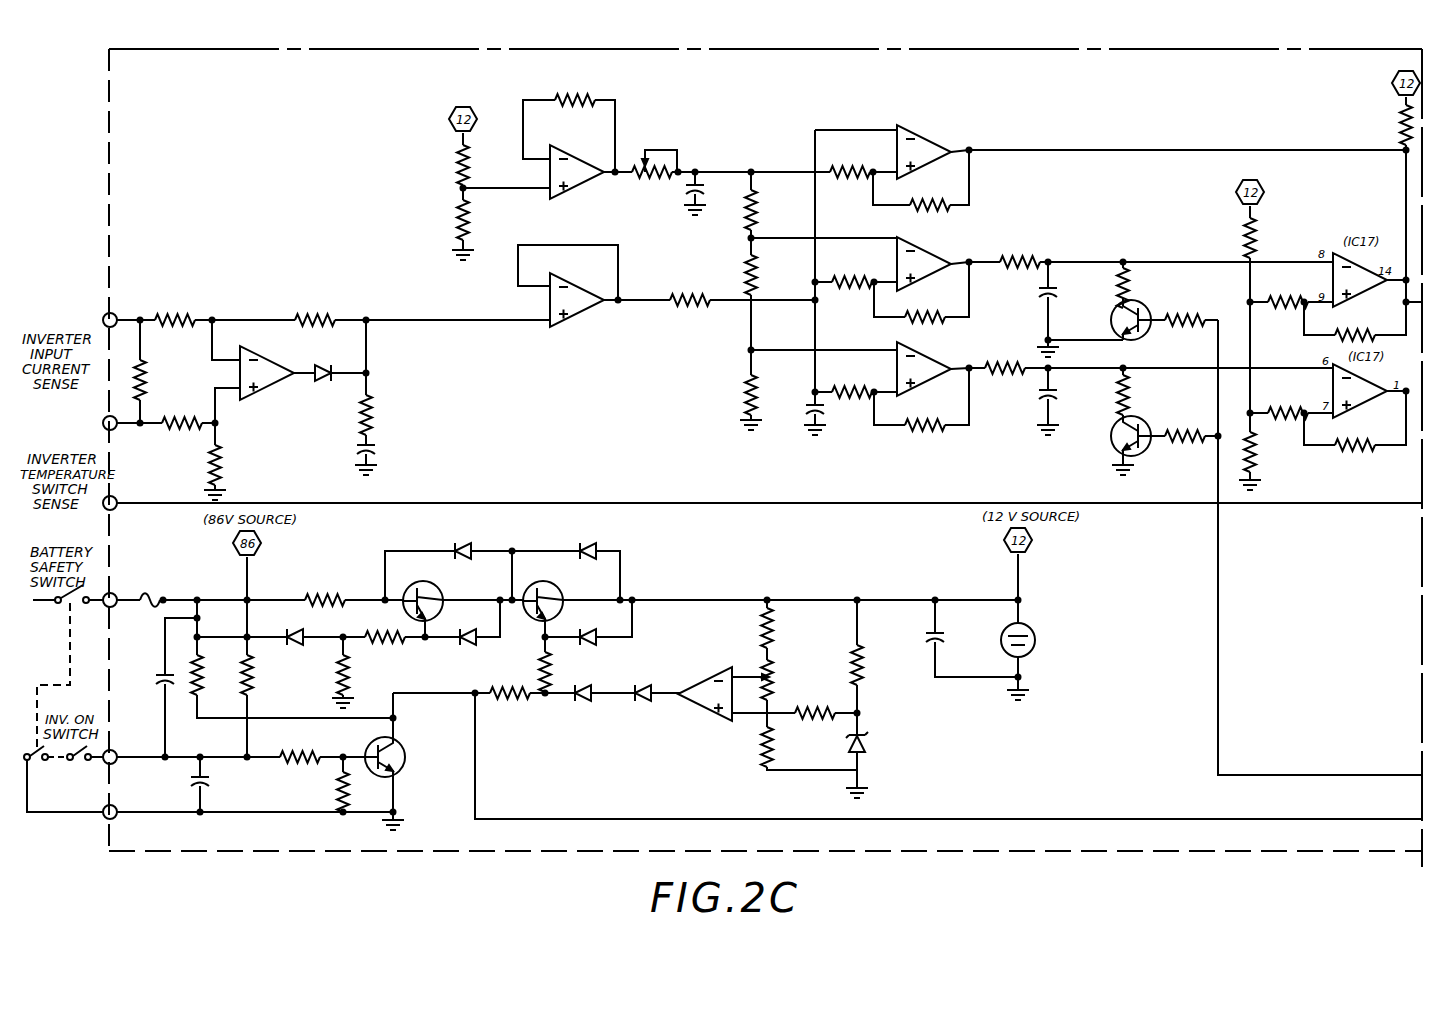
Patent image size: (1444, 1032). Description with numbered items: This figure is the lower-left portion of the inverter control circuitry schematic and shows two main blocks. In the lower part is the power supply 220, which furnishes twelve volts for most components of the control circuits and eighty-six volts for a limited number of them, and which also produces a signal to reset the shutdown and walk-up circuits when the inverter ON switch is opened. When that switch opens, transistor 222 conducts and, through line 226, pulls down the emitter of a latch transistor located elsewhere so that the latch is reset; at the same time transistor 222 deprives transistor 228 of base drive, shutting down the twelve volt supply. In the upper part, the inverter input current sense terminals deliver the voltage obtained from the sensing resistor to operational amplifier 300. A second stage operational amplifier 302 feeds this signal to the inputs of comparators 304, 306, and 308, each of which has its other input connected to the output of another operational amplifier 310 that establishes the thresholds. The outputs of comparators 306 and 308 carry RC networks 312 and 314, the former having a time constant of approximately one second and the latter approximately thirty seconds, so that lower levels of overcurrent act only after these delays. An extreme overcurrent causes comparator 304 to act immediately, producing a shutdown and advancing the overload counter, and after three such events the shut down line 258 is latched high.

The power supply 220 is at (648, 778).
The transistor 222 is at (407, 751).
The line 226 is at (930, 820).
The transistor 228 is at (562, 586).
The shut down line 258 is at (1352, 775).
The operational amplifier 300 is at (263, 349).
The second stage operational amplifier 302 is at (565, 269).
The comparator 304 is at (913, 124).
The comparator 306 is at (922, 237).
The comparator 308 is at (930, 340).
The operational amplifier 310 is at (556, 146).
The RC network 312 is at (1031, 258).
The RC network 314 is at (1030, 363).